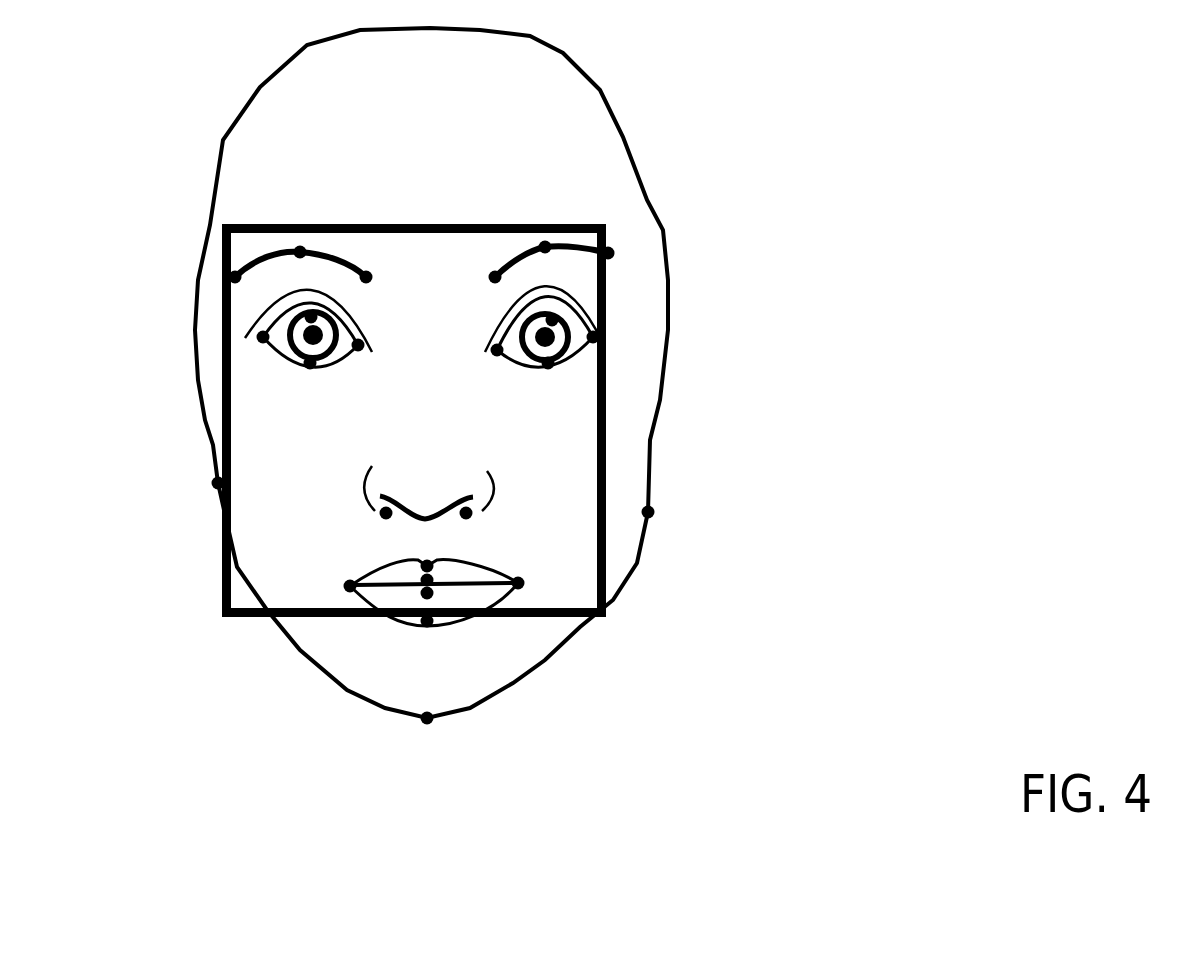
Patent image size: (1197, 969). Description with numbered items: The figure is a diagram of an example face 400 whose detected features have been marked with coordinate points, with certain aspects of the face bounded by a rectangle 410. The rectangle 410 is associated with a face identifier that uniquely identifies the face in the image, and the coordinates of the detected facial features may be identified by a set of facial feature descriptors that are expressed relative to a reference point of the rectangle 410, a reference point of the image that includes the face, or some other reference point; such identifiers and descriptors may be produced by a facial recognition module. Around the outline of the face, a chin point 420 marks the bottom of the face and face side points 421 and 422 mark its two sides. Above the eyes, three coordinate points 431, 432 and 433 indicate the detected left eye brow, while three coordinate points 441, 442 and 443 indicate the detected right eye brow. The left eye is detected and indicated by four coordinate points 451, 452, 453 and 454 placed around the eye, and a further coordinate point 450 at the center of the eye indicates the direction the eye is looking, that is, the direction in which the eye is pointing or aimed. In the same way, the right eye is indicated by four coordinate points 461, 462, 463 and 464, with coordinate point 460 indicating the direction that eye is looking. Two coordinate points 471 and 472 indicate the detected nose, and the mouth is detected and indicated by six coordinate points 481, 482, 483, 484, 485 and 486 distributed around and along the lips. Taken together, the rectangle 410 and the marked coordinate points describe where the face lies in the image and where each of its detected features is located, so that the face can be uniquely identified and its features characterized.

The face image 400 is at (458, 829).
The rectangle 410 is at (223, 226).
The chin point 420 is at (427, 718).
The face side point 421 is at (648, 512).
The face side point 422 is at (218, 483).
The left eye brow coordinate point 431 is at (608, 253).
The left eye brow coordinate point 432 is at (545, 247).
The left eye brow coordinate point 433 is at (495, 277).
The right eye brow coordinate point 441 is at (235, 276).
The right eye brow coordinate point 442 is at (300, 252).
The right eye brow coordinate point 443 is at (366, 277).
The left eye direction coordinate point 450 is at (545, 337).
The left eye coordinate point 451 is at (552, 320).
The left eye coordinate point 452 is at (548, 363).
The left eye coordinate point 453 is at (593, 337).
The left eye coordinate point 454 is at (497, 350).
The right eye direction coordinate point 460 is at (313, 335).
The right eye coordinate point 461 is at (305, 312).
The right eye coordinate point 462 is at (310, 363).
The right eye coordinate point 463 is at (263, 337).
The right eye coordinate point 464 is at (358, 345).
The nose coordinate point 471 is at (466, 513).
The nose coordinate point 472 is at (386, 513).
The mouth coordinate point 481 is at (518, 583).
The mouth coordinate point 482 is at (350, 586).
The mouth coordinate point 483 is at (427, 566).
The mouth coordinate point 484 is at (427, 580).
The mouth coordinate point 485 is at (427, 593).
The mouth coordinate point 486 is at (427, 621).